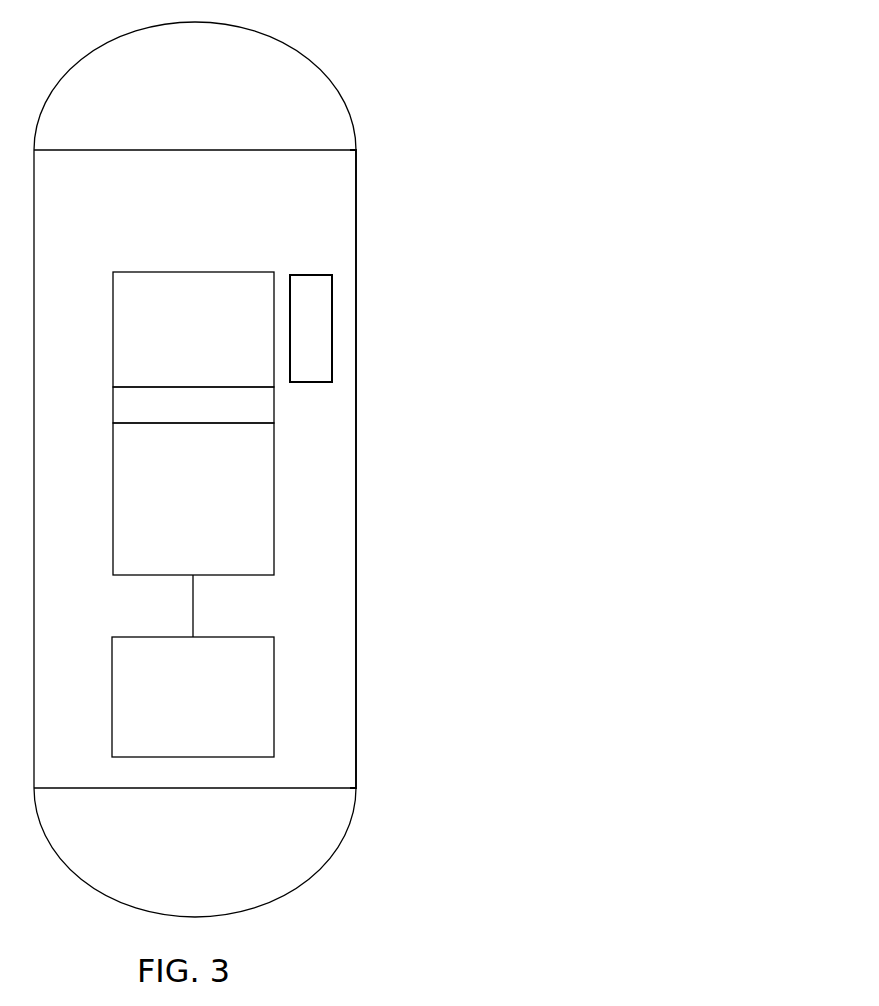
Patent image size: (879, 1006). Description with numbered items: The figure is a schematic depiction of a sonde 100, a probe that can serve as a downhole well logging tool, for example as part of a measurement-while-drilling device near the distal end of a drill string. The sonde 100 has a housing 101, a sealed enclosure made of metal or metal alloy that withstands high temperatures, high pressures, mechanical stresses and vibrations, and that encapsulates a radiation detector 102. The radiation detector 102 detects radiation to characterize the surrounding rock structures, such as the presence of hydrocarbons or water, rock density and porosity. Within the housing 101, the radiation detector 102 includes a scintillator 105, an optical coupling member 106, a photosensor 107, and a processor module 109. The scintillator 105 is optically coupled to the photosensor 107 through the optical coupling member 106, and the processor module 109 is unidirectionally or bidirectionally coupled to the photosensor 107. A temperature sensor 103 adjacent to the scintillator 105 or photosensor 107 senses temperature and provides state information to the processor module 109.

The sonde 100 is at (297, 463).
The housing 101 is at (357, 265).
The radiation detector 102 is at (306, 451).
The temperature sensor 103 is at (312, 339).
The scintillator 105 is at (212, 351).
The optical coupling member 106 is at (193, 405).
The photosensor 107 is at (212, 499).
The processor module 109 is at (210, 709).